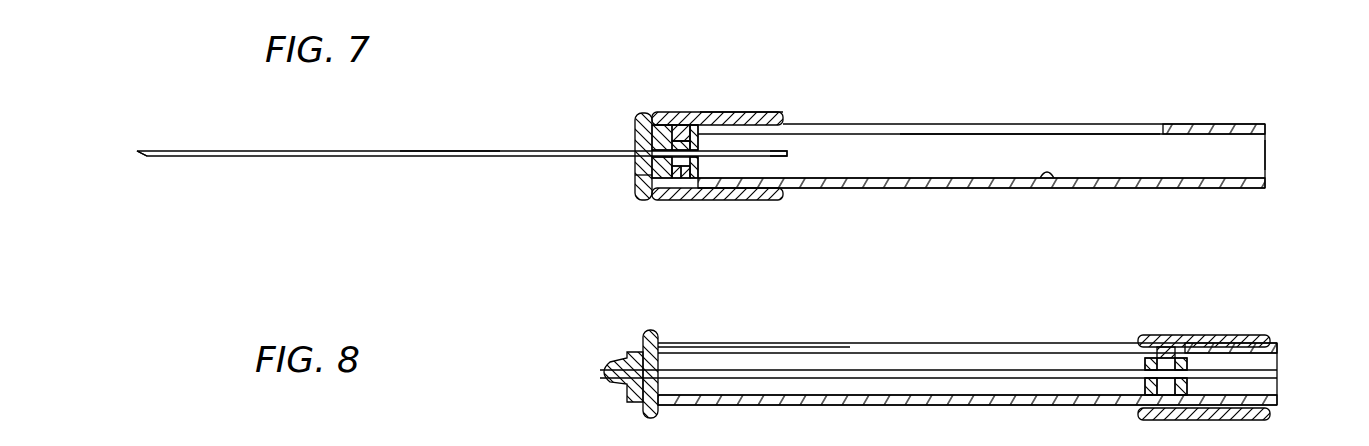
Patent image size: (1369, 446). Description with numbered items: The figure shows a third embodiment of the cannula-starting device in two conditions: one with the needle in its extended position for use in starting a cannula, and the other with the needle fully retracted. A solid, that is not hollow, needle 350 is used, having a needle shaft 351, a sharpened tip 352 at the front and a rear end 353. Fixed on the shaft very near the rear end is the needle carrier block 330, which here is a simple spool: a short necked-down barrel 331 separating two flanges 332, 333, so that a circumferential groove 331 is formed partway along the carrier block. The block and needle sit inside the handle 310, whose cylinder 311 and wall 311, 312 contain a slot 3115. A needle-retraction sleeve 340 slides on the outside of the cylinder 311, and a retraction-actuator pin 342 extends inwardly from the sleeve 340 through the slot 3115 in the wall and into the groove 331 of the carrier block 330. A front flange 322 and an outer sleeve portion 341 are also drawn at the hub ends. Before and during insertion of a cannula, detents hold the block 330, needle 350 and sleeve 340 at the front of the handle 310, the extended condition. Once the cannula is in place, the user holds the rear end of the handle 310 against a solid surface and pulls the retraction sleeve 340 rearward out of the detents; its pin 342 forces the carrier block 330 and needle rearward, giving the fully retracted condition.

In FIG. 7, the handle 310 is at (1301, 91).
In FIG. 7, the cylinder 311 is at (990, 190).
In FIG. 8, the cylinder 311 is at (967, 374).
In FIG. 7, the wall 312 is at (1048, 180).
In FIG. 7, the slot 3115 is at (1160, 130).
In FIG. 8, the slot 3115 is at (922, 350).
In FIG. 7, the hub flange 322 is at (604, 124).
In FIG. 7, the carrier block 330 is at (703, 177).
In FIG. 8, the carrier block 330 is at (1128, 365).
In FIG. 7, the necked-down barrel 331 is at (682, 182).
In FIG. 7, the flange 332 is at (700, 182).
In FIG. 7, the flange 333 is at (637, 180).
In FIG. 7, the needle-retraction sleeve 340 is at (766, 80).
In FIG. 7, the hub sleeve 341 is at (707, 115).
In FIG. 8, the hub sleeve 341 is at (1222, 337).
In FIG. 7, the retraction-actuator pin 342 is at (680, 130).
In FIG. 7, the solid needle 350 is at (457, 127).
In FIG. 7, the needle shaft 351 is at (322, 150).
In FIG. 7, the sharpened tip 352 is at (137, 154).
In FIG. 8, the sharpened tip 352 is at (612, 372).
In FIG. 7, the rear end 353 is at (788, 153).